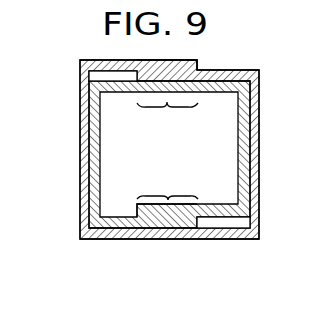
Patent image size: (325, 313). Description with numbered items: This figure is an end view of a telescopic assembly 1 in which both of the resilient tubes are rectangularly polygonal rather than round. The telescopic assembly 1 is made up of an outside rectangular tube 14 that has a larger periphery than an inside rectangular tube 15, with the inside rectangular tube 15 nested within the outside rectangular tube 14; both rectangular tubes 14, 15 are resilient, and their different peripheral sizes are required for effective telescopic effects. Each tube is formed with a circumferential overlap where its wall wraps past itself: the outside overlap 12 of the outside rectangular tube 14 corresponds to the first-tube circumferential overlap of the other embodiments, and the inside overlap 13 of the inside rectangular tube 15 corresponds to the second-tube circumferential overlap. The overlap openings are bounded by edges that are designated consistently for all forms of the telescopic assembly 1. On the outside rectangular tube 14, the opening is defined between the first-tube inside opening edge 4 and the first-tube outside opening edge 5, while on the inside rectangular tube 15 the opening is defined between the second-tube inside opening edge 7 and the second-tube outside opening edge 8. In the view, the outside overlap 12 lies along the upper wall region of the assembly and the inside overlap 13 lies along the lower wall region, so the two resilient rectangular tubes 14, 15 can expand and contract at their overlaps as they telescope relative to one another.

The telescopic assembly 1 is at (45, 232).
The first-tube inside opening edge 4 is at (130, 72).
The first-tube outside opening edge 5 is at (197, 63).
The second-tube inside opening edge 7 is at (137, 204).
The second-tube outside opening edge 8 is at (197, 222).
The outside overlap 12 is at (167, 117).
The inside overlap 13 is at (167, 185).
The outside rectangular tube 14 is at (80, 119).
The inside rectangular tube 15 is at (92, 163).